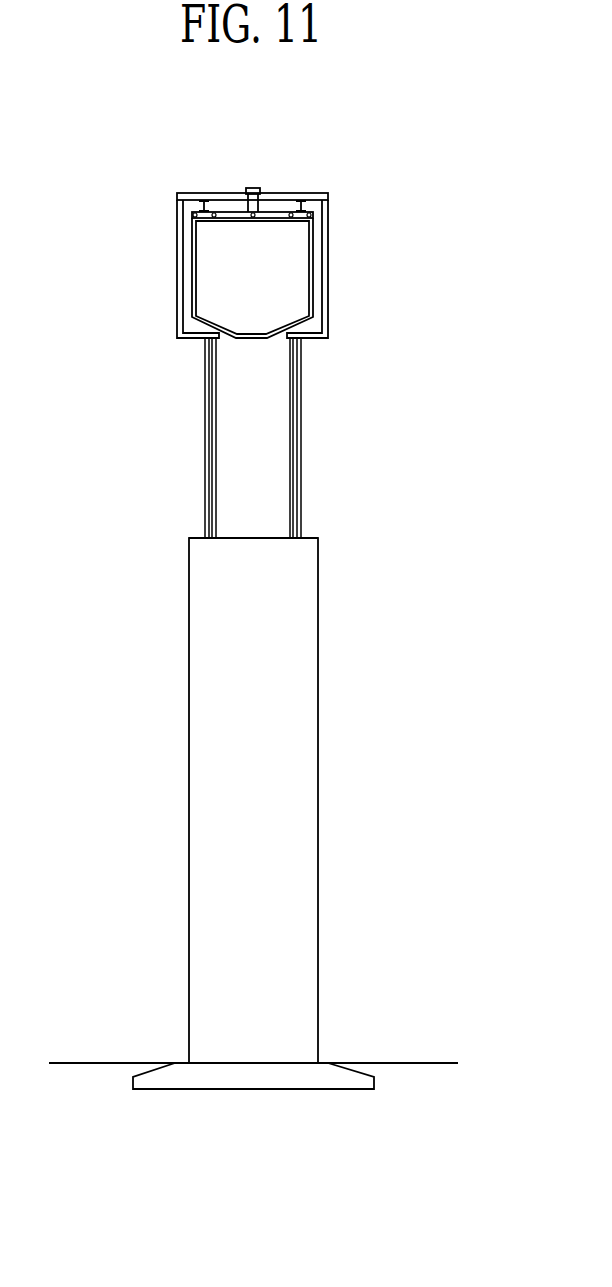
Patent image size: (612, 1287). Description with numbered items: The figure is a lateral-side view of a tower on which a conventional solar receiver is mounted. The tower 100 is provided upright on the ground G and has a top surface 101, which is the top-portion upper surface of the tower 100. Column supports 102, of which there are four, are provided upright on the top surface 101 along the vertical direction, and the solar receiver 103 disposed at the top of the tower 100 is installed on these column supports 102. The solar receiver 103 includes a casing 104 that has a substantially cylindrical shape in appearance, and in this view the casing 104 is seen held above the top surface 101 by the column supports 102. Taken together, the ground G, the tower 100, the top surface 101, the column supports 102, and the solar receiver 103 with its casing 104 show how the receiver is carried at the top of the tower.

The tower 100 is at (217, 770).
The top surface 101 is at (307, 535).
The column supports 102 is at (212, 400).
The solar receiver 103 is at (163, 186).
The casing 104 is at (318, 257).
The ground G is at (87, 1063).